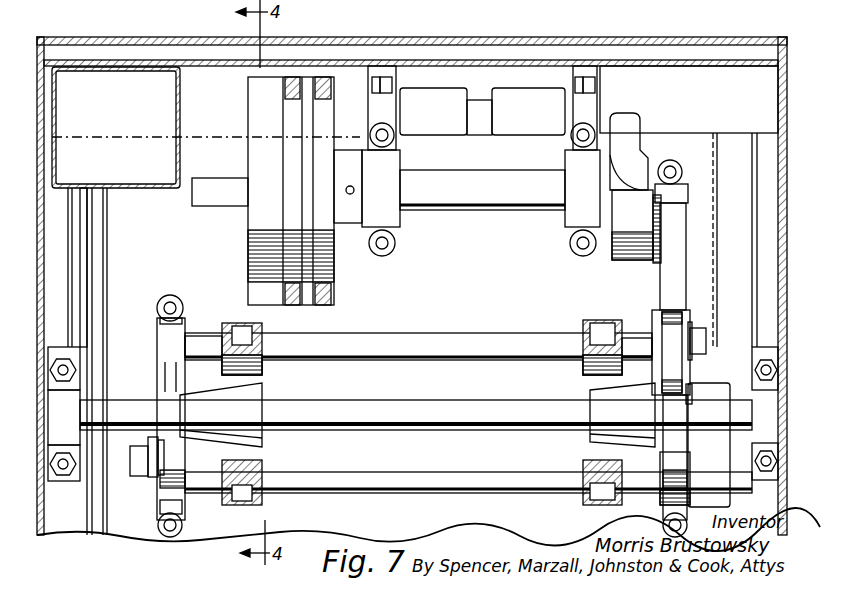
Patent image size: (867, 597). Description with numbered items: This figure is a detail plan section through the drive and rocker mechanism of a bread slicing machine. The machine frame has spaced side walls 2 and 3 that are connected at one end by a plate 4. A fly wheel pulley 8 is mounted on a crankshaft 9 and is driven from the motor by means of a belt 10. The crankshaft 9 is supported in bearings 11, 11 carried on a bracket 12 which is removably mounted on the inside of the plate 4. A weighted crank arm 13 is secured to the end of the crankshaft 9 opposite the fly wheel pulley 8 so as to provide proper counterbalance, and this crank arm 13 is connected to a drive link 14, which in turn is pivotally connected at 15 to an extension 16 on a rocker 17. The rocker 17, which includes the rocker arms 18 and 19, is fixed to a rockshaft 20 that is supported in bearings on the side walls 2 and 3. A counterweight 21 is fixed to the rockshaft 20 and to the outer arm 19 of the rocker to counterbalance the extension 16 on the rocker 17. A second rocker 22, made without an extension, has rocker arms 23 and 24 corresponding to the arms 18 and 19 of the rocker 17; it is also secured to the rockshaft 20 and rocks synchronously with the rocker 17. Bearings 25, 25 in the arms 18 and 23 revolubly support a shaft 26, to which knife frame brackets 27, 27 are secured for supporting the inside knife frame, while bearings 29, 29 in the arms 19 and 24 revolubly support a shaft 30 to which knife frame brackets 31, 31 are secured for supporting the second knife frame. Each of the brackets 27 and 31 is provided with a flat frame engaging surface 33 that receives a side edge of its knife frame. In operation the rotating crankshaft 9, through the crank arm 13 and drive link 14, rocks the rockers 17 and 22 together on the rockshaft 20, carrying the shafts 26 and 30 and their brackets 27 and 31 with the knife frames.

The side wall 2 is at (40, 106).
The side wall 3 is at (786, 112).
The plate 4 is at (483, 62).
The fly wheel pulley 8 is at (248, 105).
The crankshaft 9 is at (524, 212).
The belt 10 is at (293, 77).
The bearings 11 is at (400, 165).
The bracket 12 is at (443, 90).
The weighted crank arm 13 is at (630, 115).
The drive link 14 is at (684, 197).
The pivotal connection 15 is at (707, 345).
The extension 16 is at (668, 325).
The rocker 17 is at (636, 365).
The rocker arm 18 is at (692, 392).
The rocker arm 19 is at (668, 472).
The rockshaft 20 is at (450, 402).
The counterweight 21 is at (709, 445).
The second rocker 22 is at (158, 345).
The rocker arm 23 is at (185, 320).
The rocker arm 24 is at (185, 494).
The bearings 25 is at (186, 340).
The shaft 26 is at (404, 342).
The knife frame brackets 27 is at (262, 337).
The bearings 29 is at (188, 474).
The shaft 30 is at (446, 493).
The knife frame brackets 31 is at (262, 468).
The flat frame engaging surface 33 is at (255, 400).